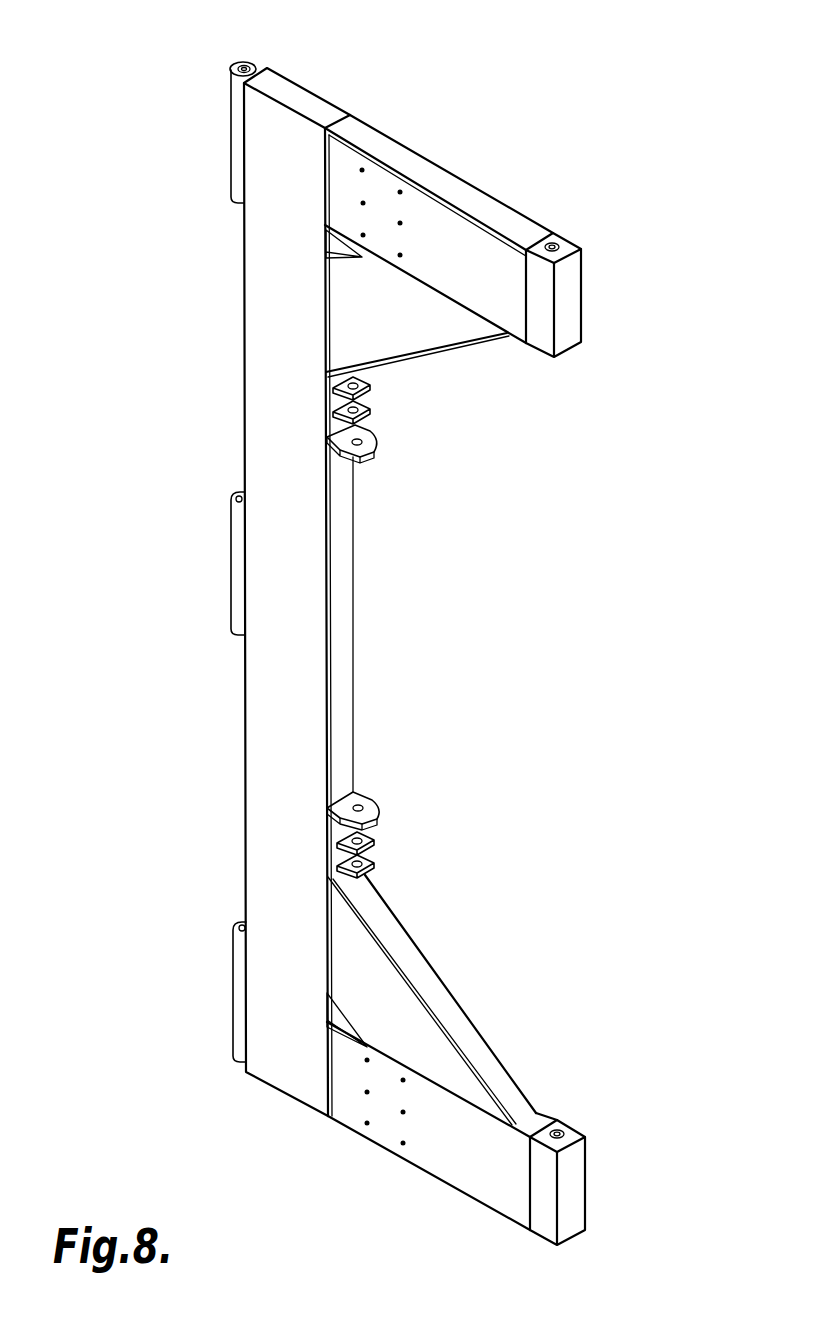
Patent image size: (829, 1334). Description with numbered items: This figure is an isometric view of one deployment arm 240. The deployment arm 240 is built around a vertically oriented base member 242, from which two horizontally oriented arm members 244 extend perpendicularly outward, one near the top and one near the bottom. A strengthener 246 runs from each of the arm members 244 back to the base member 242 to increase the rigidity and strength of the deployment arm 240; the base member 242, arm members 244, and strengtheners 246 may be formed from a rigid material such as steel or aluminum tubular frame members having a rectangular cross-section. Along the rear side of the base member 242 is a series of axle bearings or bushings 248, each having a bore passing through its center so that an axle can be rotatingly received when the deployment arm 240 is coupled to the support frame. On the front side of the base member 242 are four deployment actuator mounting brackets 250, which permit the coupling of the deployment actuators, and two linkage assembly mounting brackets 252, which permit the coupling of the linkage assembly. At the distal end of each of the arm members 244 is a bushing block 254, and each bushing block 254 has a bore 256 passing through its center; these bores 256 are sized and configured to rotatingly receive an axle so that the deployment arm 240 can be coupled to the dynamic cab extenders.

The deployment arm 240 is at (578, 97).
The base member 242 is at (290, 1063).
The arm member 244 is at (425, 167).
The strengthener 246 is at (422, 322).
The axle bearing or bushing 248 is at (231, 131).
The deployment actuator mounting bracket 250 is at (243, 63).
The linkage assembly mounting bracket 252 is at (373, 442).
The bushing block 254 is at (567, 295).
The bore 256 is at (555, 244).